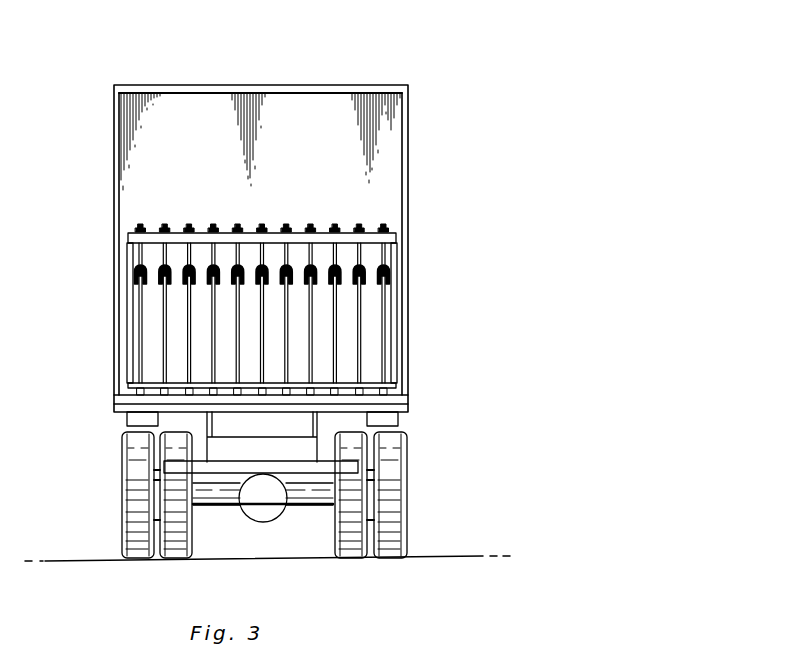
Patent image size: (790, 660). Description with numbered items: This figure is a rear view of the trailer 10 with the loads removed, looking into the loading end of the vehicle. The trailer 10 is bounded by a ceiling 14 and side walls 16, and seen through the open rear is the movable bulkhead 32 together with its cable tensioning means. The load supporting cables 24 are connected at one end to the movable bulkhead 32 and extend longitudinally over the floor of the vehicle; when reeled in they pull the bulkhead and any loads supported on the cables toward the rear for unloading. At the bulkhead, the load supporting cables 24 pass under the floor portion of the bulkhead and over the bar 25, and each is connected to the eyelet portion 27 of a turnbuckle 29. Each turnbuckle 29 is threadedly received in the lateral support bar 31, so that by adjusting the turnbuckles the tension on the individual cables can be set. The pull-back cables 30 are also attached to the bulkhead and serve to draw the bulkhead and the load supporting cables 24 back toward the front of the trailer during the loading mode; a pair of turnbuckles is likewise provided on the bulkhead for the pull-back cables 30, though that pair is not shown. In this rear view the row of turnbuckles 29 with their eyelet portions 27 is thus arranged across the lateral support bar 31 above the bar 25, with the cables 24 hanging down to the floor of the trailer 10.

The trailer 10 is at (430, 118).
The ceiling 14 is at (208, 85).
The side walls 16 is at (114, 138).
The load supporting cables 24 is at (163, 328).
The bar 25 is at (252, 387).
The eyelet portion 27 is at (135, 274).
The turnbuckle 29 is at (396, 262).
The pull-back cables 30 is at (190, 360).
The lateral support bar 31 is at (172, 232).
The movable bulkhead 32 is at (274, 222).